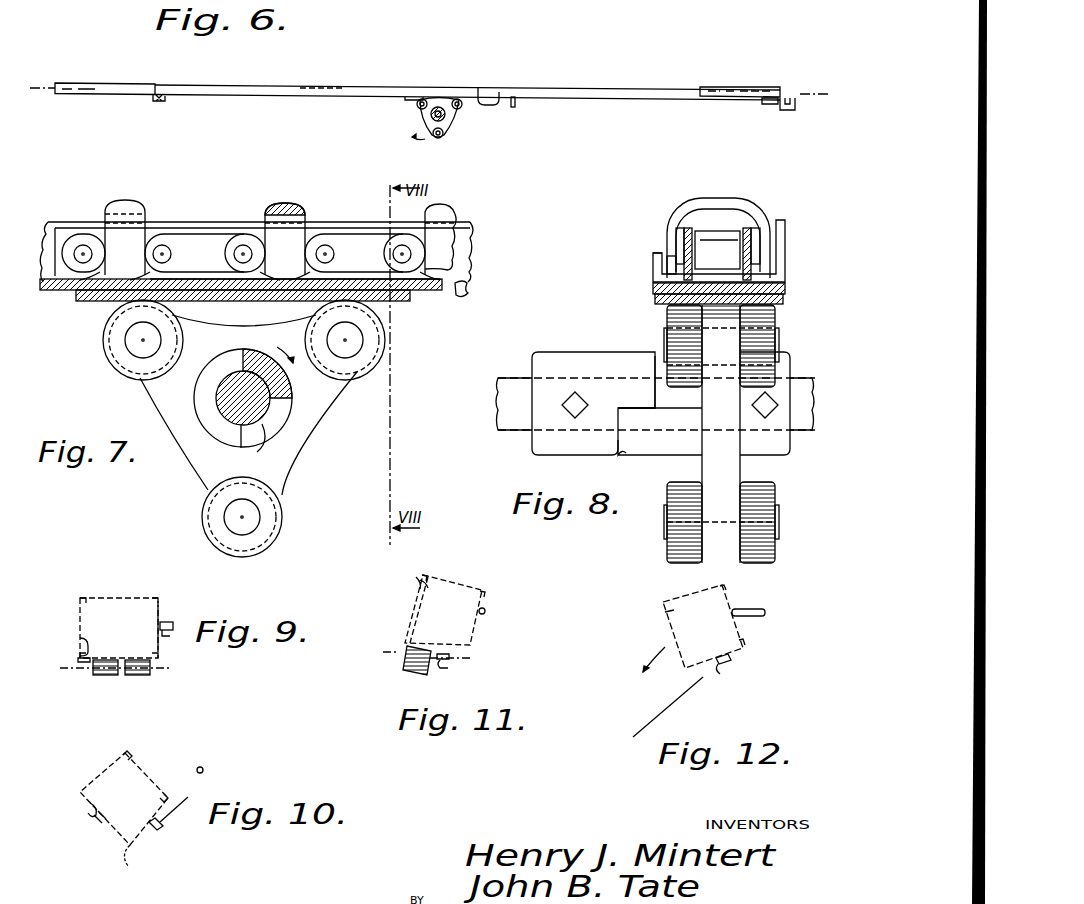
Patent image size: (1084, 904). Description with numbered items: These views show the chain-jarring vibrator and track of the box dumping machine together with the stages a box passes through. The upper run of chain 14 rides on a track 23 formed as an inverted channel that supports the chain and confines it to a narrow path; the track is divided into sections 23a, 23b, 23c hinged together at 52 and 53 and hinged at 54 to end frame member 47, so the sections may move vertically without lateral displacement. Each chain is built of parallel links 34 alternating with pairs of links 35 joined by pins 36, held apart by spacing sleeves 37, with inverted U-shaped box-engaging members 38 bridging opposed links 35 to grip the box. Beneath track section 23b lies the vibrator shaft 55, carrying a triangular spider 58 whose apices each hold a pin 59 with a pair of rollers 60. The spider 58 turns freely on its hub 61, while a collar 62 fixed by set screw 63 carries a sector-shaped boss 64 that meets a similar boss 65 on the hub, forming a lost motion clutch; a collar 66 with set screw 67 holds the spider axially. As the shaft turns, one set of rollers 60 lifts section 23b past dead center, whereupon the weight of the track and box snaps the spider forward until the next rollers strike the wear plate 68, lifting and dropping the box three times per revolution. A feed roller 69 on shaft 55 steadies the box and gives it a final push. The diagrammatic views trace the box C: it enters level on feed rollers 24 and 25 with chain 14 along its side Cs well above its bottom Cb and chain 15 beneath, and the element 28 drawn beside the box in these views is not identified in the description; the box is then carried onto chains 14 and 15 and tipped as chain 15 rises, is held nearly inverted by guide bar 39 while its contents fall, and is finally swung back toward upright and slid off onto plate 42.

In FIG. 6, the chain 14 is at (58, 84).
In FIG. 7, the chain 14 is at (202, 222).
In FIG. 8, the chain 14 is at (732, 200).
In FIG. 9, the chain 14 is at (170, 623).
In FIG. 10, the chain 14 is at (184, 805).
In FIG. 11, the chain 14 is at (449, 655).
In FIG. 12, the chain 14 is at (727, 662).
In FIG. 9, the chain 15 is at (81, 640).
In FIG. 10, the chain 15 is at (90, 808).
In FIG. 11, the chain 15 is at (428, 578).
In FIG. 6, the track 23 is at (640, 90).
In FIG. 7, the track 23 is at (470, 228).
In FIG. 8, the track 23 is at (651, 262).
In FIG. 9, the track 23 is at (167, 633).
In FIG. 10, the track 23 is at (160, 828).
In FIG. 11, the track 23 is at (440, 667).
In FIG. 12, the track 23 is at (718, 670).
In FIG. 6, the track section 23a is at (140, 98).
In FIG. 6, the track section 23b is at (331, 88).
In FIG. 7, the track section 23b is at (463, 277).
In FIG. 8, the track section 23b is at (655, 254).
In FIG. 6, the track section 23c is at (687, 88).
In FIG. 9, the feed roller 24 is at (141, 676).
In FIG. 9, the feed roller 25 is at (104, 676).
In FIG. 9, the car lug 28 is at (82, 662).
In FIG. 10, the car lug 28 is at (99, 824).
In FIG. 11, the car lug 28 is at (418, 576).
In FIG. 7, the link 34 is at (354, 234).
In FIG. 8, the link 34 is at (688, 229).
In FIG. 7, the link 35 is at (250, 235).
In FIG. 8, the link 35 is at (676, 233).
In FIG. 7, the pin 36 is at (398, 257).
In FIG. 8, the pin 36 is at (668, 262).
In FIG. 8, the spacing sleeve 37 is at (725, 236).
In FIG. 7, the box-engaging member 38 is at (125, 200).
In FIG. 8, the box-engaging member 38 is at (706, 201).
In FIG. 10, the guide bar 39 is at (205, 769).
In FIG. 11, the guide bar 39 is at (485, 612).
In FIG. 12, the guide bar 39 is at (760, 612).
In FIG. 12, the plate 42 is at (663, 705).
In FIG. 6, the end frame member 47 is at (798, 108).
In FIG. 6, the hinge 52 is at (160, 101).
In FIG. 6, the hinge 53 is at (497, 98).
In FIG. 6, the hinge 54 is at (765, 104).
In FIG. 6, the vibrator shaft 55 is at (432, 117).
In FIG. 7, the vibrator shaft 55 is at (226, 414).
In FIG. 8, the vibrator shaft 55 is at (511, 379).
In FIG. 6, the vibrator spider 58 is at (450, 115).
In FIG. 7, the vibrator spider 58 is at (291, 458).
In FIG. 8, the vibrator spider 58 is at (700, 416).
In FIG. 7, the pin 59 is at (132, 340).
In FIG. 8, the pin 59 is at (780, 340).
In FIG. 6, the roller 60 is at (455, 99).
In FIG. 7, the roller 60 is at (105, 352).
In FIG. 8, the roller 60 is at (666, 315).
In FIG. 7, the hub 61 is at (194, 398).
In FIG. 8, the hub 61 is at (640, 455).
In FIG. 8, the collar 62 is at (546, 354).
In FIG. 8, the set screw 63 is at (579, 395).
In FIG. 7, the boss 64 is at (247, 352).
In FIG. 8, the boss 64 is at (640, 362).
In FIG. 7, the boss 65 is at (264, 442).
In FIG. 8, the boss 65 is at (624, 451).
In FIG. 8, the collar 66 is at (773, 453).
In FIG. 8, the set screw 67 is at (780, 398).
In FIG. 6, the wear plate 68 is at (408, 100).
In FIG. 7, the wear plate 68 is at (414, 302).
In FIG. 8, the wear plate 68 is at (652, 292).
In FIG. 11, the feed roller 69 is at (406, 668).
In FIG. 9, the field box C is at (110, 598).
In FIG. 10, the field box C is at (130, 778).
In FIG. 11, the field box C is at (471, 589).
In FIG. 12, the field box C is at (667, 626).
In FIG. 9, the bottom Cb is at (128, 656).
In FIG. 10, the bottom Cb is at (138, 864).
In FIG. 11, the bottom Cb is at (411, 620).
In FIG. 12, the bottom Cb is at (663, 613).
In FIG. 9, the side Cs is at (160, 601).